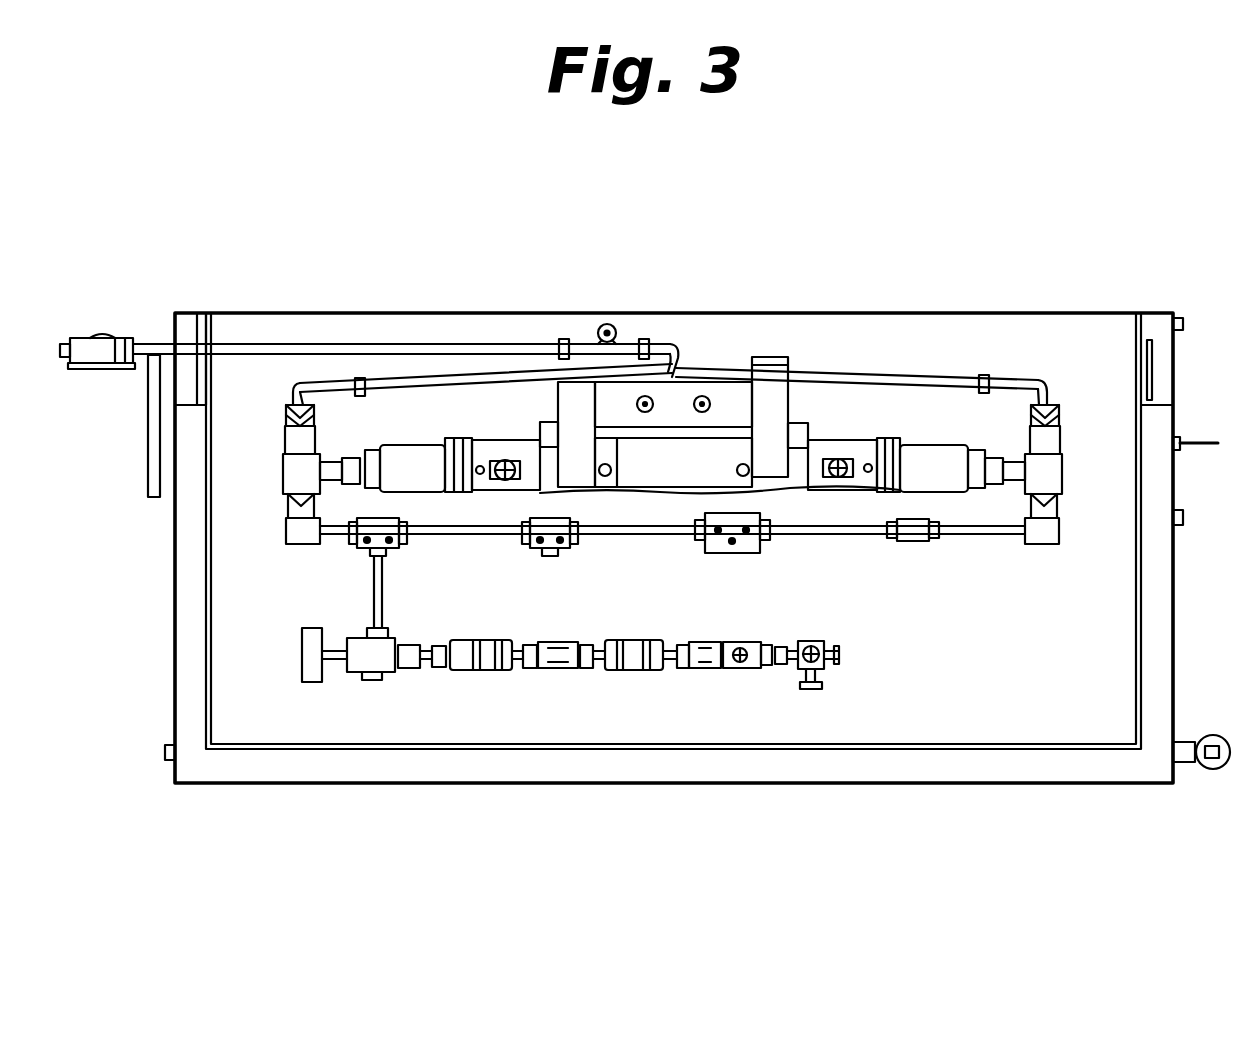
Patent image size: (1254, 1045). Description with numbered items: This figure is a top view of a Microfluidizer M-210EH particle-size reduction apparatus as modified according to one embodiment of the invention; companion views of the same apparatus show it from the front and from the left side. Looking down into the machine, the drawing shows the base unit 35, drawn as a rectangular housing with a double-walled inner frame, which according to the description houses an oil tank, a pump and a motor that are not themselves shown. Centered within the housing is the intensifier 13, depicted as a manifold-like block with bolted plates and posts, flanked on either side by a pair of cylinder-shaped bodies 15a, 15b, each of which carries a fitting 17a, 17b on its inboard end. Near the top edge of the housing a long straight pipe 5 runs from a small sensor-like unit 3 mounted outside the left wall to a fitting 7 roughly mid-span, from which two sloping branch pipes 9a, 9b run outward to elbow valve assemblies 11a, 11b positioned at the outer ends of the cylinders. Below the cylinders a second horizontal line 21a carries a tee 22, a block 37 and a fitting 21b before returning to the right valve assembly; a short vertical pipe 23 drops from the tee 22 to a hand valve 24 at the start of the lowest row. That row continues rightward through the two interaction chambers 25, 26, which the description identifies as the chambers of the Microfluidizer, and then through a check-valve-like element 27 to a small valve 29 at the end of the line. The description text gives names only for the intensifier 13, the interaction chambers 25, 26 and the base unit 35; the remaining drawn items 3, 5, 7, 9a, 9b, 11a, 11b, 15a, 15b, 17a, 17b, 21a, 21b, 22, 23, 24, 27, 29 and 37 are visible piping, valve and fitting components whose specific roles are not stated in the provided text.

The sensor unit 3 is at (106, 336).
The supply pipe 5 is at (252, 343).
The pipe fitting 7 is at (676, 358).
The first branch pipe 9a is at (443, 380).
The second branch pipe 9b is at (826, 370).
The first shut-off valve 11a is at (303, 452).
The second shut-off valve 11b is at (1062, 437).
The intensifier 13 is at (863, 420).
The first cylinder 15a is at (408, 452).
The second cylinder 15b is at (925, 460).
The first control valve 17a is at (513, 447).
The second control valve 17b is at (845, 478).
The first return pipe 21a is at (327, 537).
The return pipe fitting 21b is at (920, 542).
The tee fitting 22 is at (382, 545).
The connecting pipe 23 is at (371, 590).
The hand valve 24 is at (352, 677).
The interaction chamber 25 is at (480, 672).
The interaction chamber 26 is at (637, 672).
The check valve 27 is at (743, 672).
The drain valve 29 is at (818, 673).
The base unit 35 is at (990, 712).
The distribution block 37 is at (718, 548).